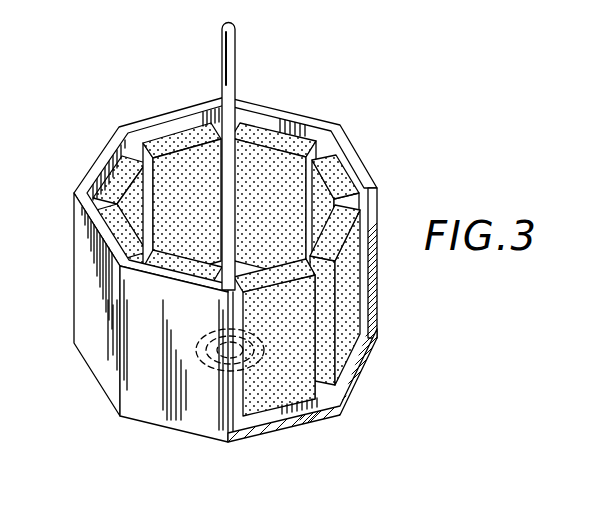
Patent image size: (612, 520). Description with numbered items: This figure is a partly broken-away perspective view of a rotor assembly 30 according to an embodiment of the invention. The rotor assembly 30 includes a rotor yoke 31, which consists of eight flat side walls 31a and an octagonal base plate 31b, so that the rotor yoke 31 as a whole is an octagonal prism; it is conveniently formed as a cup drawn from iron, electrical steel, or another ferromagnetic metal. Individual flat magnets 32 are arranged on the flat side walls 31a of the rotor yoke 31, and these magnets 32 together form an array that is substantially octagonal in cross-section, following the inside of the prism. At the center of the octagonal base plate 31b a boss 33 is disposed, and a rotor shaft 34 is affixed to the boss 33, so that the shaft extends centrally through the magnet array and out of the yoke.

The rotor assembly 30 is at (150, 97).
The rotor yoke 31 is at (358, 158).
The flat side walls 31a is at (96, 312).
The octagonal base plate 31b is at (305, 418).
The flat magnets 32 is at (356, 248).
The boss 33 is at (201, 333).
The rotor shaft 34 is at (235, 47).